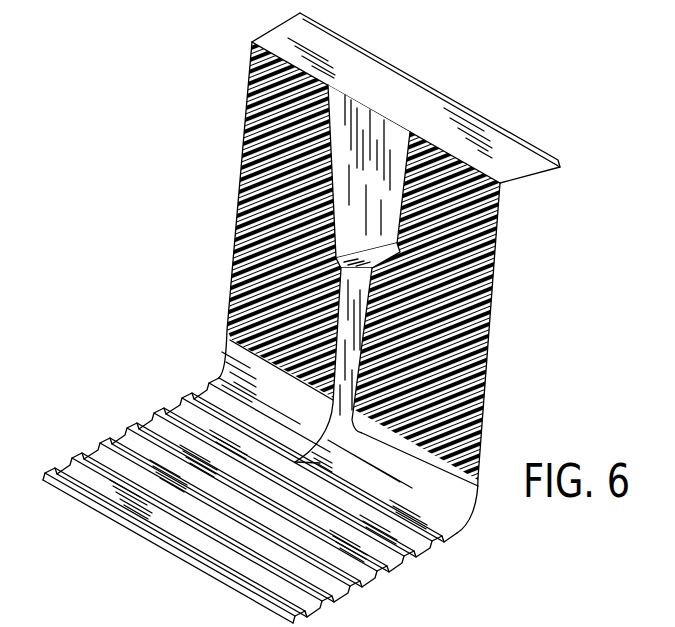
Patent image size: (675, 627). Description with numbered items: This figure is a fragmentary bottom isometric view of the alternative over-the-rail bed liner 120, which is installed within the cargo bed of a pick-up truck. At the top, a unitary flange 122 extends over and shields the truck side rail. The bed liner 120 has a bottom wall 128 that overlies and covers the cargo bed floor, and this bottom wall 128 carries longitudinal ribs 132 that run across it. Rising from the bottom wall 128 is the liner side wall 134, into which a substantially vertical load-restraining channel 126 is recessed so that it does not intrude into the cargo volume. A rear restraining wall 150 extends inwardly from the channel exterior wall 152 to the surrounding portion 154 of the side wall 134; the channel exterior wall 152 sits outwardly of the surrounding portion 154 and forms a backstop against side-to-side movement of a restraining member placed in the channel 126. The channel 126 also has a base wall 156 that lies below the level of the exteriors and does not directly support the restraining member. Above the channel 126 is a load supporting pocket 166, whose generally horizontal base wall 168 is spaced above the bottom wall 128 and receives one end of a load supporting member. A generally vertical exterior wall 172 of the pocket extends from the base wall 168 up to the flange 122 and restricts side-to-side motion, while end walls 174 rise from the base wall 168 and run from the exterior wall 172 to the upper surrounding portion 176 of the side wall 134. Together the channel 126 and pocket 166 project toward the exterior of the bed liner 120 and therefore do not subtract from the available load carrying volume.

The over-the-rail bed liner 120 is at (164, 126).
The flange 122 is at (426, 80).
The load-restraining channel 126 is at (391, 433).
The bottom wall 128 is at (357, 588).
The longitudinal rib 132 is at (74, 462).
The side wall 134 is at (242, 196).
The rear restraining wall 150 is at (333, 406).
The channel exterior wall 152 is at (400, 337).
The surrounding portion of side wall 154 is at (430, 376).
The channel base wall 156 is at (337, 462).
The load supporting pocket 166 is at (393, 248).
The pocket base wall 168 is at (396, 292).
The pocket exterior wall 172 is at (365, 115).
The end wall 174 is at (333, 230).
The upper surrounding portion of side wall 176 is at (440, 190).